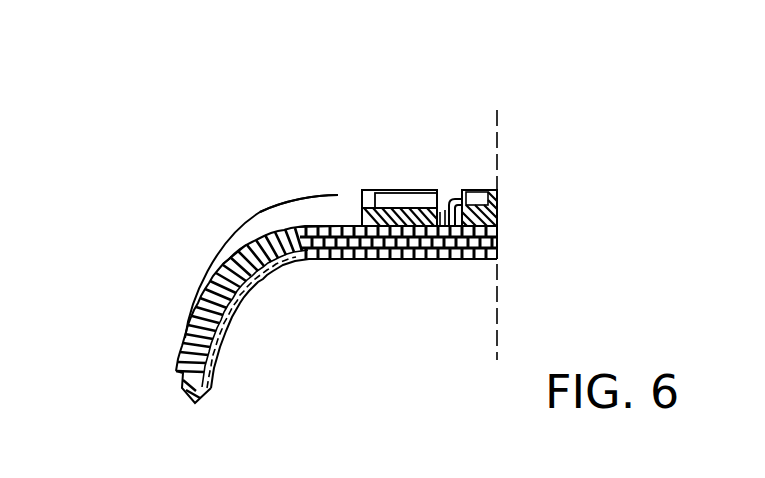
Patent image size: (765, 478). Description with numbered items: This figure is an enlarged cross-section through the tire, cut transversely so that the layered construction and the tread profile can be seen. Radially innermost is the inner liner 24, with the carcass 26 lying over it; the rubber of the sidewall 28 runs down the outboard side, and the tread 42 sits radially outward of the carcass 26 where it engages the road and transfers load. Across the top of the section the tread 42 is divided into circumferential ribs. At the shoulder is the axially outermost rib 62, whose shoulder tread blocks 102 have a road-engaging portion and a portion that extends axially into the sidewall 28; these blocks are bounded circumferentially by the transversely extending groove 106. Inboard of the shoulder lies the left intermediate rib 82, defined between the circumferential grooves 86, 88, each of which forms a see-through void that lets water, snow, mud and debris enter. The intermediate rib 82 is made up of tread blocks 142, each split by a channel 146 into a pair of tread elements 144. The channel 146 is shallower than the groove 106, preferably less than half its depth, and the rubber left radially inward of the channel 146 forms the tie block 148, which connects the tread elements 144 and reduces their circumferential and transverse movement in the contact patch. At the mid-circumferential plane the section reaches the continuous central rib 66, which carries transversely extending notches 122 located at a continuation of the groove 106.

The inner liner 24 is at (353, 266).
The carcass 26 is at (217, 360).
The sidewall 28 is at (182, 340).
The tread 42 is at (360, 183).
The axially outermost rib 62 is at (243, 221).
The central rib 66 is at (496, 177).
The left intermediate rib 82 is at (407, 185).
The groove 86 is at (338, 220).
The groove 88 is at (492, 183).
The shoulder tread block 102 is at (242, 246).
The transversely extending groove 106 is at (298, 232).
The transversely extending notch 122 is at (498, 257).
The tread block 142 is at (436, 227).
The tread element 144 is at (392, 197).
The channel 146 is at (446, 222).
The tie block 148 is at (427, 260).